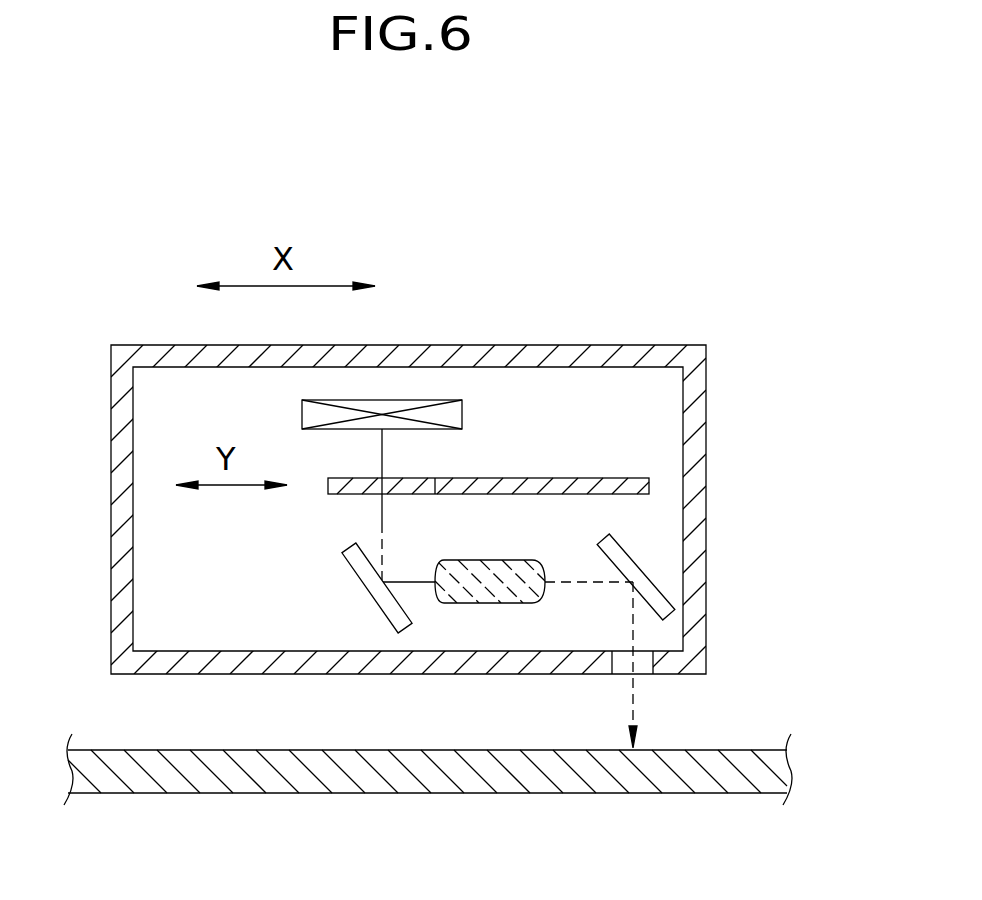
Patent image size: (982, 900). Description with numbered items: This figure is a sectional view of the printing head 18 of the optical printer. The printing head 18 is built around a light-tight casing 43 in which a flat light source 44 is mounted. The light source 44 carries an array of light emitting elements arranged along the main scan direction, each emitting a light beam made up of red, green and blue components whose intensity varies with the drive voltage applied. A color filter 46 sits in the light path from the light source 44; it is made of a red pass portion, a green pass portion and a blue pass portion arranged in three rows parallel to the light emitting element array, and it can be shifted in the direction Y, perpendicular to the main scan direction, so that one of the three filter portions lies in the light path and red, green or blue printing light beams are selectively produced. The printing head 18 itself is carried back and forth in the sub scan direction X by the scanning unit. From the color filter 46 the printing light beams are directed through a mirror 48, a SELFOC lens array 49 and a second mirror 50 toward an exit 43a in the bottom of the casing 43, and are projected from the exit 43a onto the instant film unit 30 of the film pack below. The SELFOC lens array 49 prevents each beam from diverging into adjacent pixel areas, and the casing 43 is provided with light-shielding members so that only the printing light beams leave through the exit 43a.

The printing head 18 is at (660, 325).
The instant film unit 30 is at (512, 800).
The light-tight casing 43 is at (735, 425).
The exit 43a is at (642, 674).
The flat light source 44 is at (462, 412).
The color filter 46 is at (507, 478).
The mirror 48 is at (365, 592).
The SELFOC lens array 49 is at (480, 560).
The mirror 50 is at (660, 582).